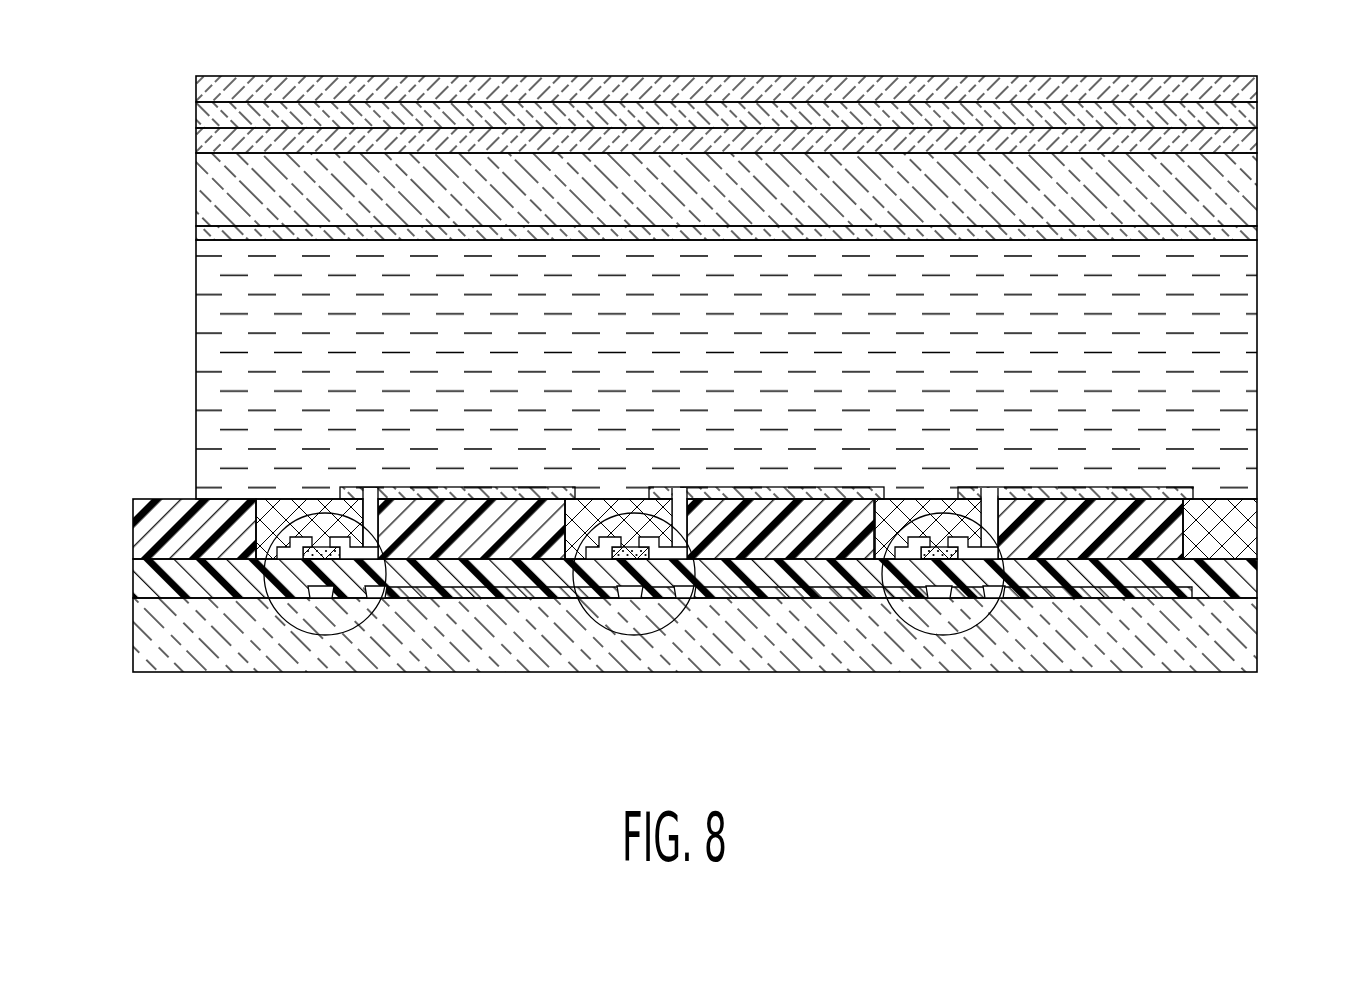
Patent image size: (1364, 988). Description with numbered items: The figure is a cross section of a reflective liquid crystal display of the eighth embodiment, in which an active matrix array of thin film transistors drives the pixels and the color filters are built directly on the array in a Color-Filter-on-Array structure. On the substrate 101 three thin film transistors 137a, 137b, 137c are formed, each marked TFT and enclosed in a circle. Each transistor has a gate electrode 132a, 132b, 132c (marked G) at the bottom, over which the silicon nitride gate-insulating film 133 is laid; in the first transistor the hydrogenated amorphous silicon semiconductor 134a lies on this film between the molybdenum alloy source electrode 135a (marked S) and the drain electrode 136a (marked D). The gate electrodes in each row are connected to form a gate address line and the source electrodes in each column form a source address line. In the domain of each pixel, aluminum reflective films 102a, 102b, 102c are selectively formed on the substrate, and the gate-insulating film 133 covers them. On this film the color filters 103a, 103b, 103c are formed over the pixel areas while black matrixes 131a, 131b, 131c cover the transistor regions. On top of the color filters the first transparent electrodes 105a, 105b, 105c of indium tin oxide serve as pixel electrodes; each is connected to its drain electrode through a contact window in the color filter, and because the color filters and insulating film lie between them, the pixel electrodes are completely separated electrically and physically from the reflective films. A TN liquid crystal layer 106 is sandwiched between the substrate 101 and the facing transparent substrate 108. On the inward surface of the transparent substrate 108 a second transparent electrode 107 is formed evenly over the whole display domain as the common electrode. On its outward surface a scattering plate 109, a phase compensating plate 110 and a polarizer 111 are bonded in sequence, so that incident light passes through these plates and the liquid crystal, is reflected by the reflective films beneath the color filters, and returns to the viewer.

The substrate 101 is at (1257, 635).
The reflective film 102a is at (505, 595).
The reflective film 102b is at (800, 596).
The reflective film 102c is at (1100, 596).
The color filter 103a is at (442, 537).
The color filter 103b is at (762, 537).
The color filter 103c is at (1072, 537).
The first transparent electrode 105a is at (508, 490).
The first transparent electrode 105b is at (830, 488).
The first transparent electrode 105c is at (1138, 488).
The liquid crystal layer 106 is at (1245, 350).
The second transparent electrode 107 is at (1257, 235).
The transparent substrate 108 is at (1257, 172).
The scattering plate 109 is at (1257, 130).
The phase compensating plate 110 is at (1257, 108).
The polarizer 111 is at (1257, 80).
The black matrix 131a is at (266, 511).
The black matrix 131b is at (585, 512).
The black matrix 131c is at (897, 512).
The gate electrode 132a is at (316, 600).
The gate electrode 132b is at (624, 600).
The gate electrode 132c is at (933, 600).
The gate-insulating film 133 is at (1230, 583).
The semiconductor 134a is at (318, 547).
The source electrode 135a is at (282, 535).
The drain electrode 136a is at (365, 538).
The thin film transistor 137a is at (273, 619).
The thin film transistor 137b is at (655, 640).
The thin film transistor 137c is at (971, 641).